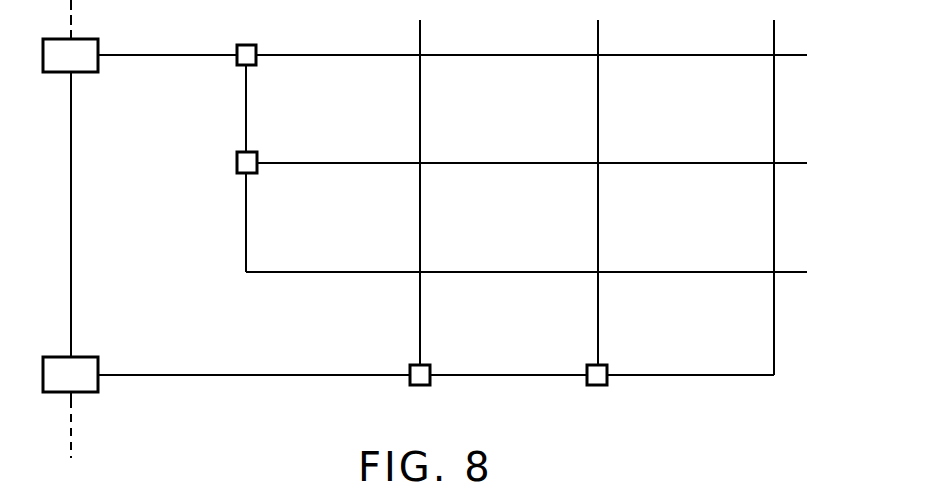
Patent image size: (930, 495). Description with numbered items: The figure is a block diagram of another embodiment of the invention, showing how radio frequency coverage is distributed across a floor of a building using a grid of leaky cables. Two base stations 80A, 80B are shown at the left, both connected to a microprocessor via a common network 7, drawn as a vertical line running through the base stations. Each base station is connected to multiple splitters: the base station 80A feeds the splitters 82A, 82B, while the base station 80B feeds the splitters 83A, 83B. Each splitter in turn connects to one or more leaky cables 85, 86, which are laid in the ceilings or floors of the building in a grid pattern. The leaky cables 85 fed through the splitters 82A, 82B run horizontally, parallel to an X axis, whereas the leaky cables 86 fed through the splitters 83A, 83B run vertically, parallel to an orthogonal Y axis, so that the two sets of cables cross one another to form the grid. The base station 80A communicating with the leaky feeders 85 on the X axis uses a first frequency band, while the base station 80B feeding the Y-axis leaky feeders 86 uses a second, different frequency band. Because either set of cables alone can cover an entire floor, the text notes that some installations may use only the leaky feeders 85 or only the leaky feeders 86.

The network 7 is at (71, 216).
The base station 80A is at (88, 39).
The base station 80B is at (88, 357).
The splitter 82A is at (257, 52).
The splitter 82B is at (282, 149).
The splitter 83A is at (420, 386).
The splitter 83B is at (597, 386).
The leaky cable 85 is at (497, 55).
The leaky cable 86 is at (420, 307).